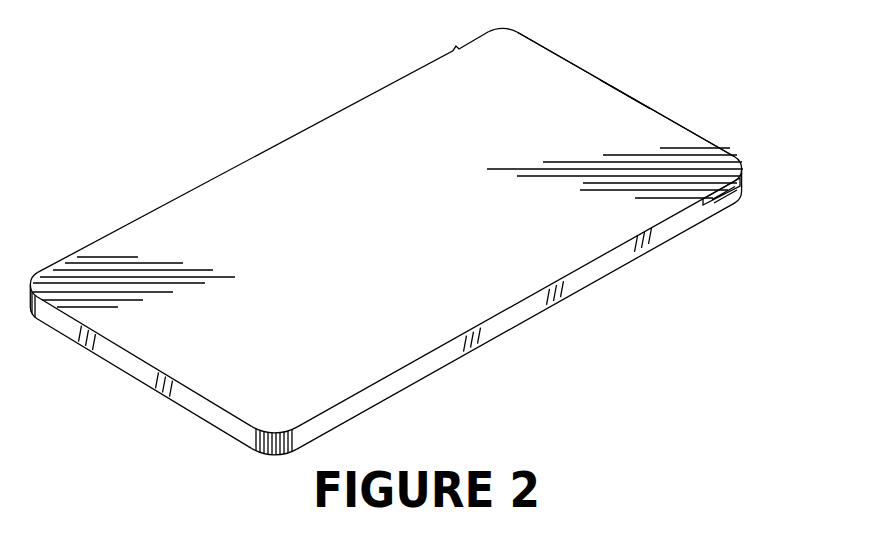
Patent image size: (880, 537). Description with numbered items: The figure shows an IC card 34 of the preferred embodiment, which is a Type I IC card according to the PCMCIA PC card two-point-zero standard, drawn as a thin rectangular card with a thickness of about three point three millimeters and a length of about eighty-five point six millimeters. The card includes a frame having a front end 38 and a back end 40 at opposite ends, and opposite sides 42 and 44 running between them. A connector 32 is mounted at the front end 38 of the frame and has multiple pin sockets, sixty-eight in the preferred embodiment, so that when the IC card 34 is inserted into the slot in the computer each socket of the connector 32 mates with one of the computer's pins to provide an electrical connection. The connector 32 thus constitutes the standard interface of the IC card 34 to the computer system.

The connector 32 is at (685, 105).
The IC card 34 is at (416, 279).
The front end 38 is at (690, 131).
The back end 40 is at (222, 429).
The side 42 is at (335, 114).
The side 44 is at (541, 303).